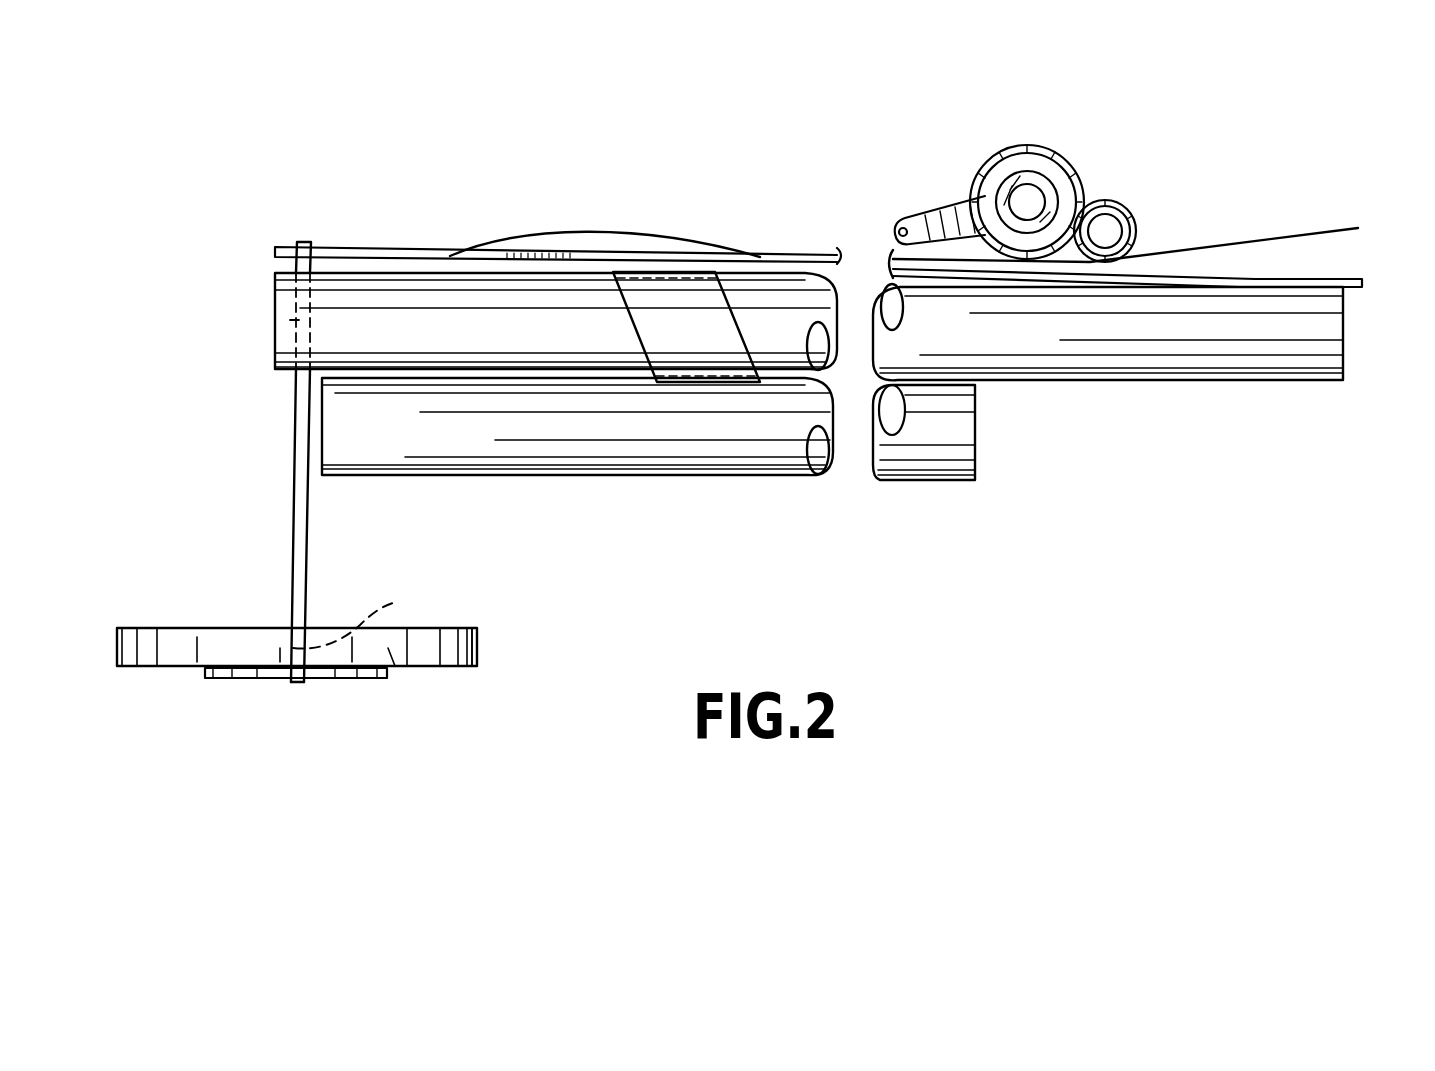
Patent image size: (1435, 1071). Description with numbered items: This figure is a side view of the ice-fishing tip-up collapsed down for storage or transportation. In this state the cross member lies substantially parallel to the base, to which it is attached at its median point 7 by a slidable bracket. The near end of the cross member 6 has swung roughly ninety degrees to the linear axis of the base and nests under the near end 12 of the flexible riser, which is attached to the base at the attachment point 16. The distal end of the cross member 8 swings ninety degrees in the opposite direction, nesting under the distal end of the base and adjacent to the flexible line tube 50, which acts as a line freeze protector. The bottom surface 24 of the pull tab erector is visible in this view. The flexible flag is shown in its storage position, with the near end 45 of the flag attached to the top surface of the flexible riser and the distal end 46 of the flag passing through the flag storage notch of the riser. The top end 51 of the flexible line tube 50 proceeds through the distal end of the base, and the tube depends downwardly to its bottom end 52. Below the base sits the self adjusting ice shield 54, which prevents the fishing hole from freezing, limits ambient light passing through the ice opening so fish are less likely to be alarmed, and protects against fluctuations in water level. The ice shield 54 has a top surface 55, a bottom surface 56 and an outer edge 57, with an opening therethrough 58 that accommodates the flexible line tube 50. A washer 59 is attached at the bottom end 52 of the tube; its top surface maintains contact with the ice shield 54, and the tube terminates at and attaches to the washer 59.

The near end of the cross member 6 is at (975, 430).
The median point 7 is at (707, 387).
The distal end of the cross member 8 is at (338, 442).
The near end of the flexible riser 12 is at (1358, 290).
The attachment point 16 is at (1298, 288).
The bottom surface of the pull tab erector 24 is at (1263, 237).
The near end of the flexible flag 45 is at (795, 258).
The distal end of the flexible flag 46 is at (455, 262).
The flexible line tube 50 is at (288, 460).
The top end of flexible line tube 51 is at (290, 320).
The bottom end of flexible line tube 52 is at (297, 667).
The self adjusting ice shield 54 is at (388, 648).
The top surface 55 is at (208, 627).
The bottom surface 56 is at (170, 663).
The outer edge 57 is at (477, 648).
The opening therethrough 58 is at (365, 616).
The washer 59 is at (330, 680).